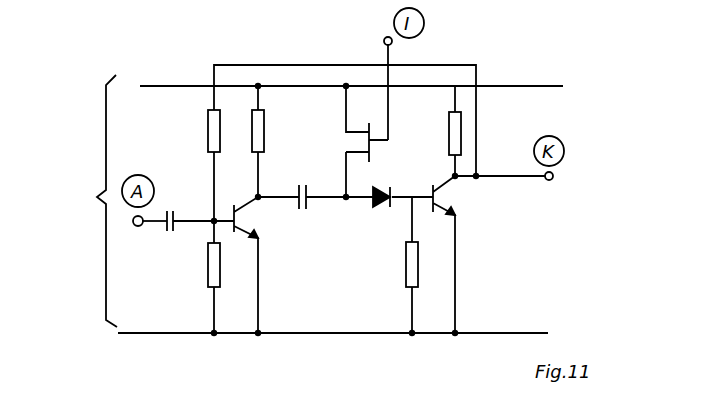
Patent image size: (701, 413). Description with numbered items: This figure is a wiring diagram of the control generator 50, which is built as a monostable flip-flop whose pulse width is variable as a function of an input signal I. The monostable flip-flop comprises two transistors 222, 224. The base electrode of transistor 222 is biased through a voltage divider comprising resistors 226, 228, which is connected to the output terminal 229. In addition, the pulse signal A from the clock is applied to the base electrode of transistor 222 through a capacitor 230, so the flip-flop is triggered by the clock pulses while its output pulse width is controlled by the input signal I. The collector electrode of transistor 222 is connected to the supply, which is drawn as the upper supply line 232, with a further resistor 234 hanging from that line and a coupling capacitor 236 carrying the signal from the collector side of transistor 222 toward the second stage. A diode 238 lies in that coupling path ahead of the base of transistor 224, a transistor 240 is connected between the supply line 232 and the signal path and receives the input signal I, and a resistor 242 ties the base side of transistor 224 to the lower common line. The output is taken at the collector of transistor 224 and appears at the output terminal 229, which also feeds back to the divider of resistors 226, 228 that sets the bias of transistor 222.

The control generator 50 is at (87, 201).
The transistor 222 is at (254, 222).
The transistor 224 is at (450, 205).
The resistor 226 is at (213, 128).
The resistor 228 is at (213, 265).
The output terminal 229 is at (491, 175).
The capacitor 230 is at (164, 225).
The supply line 232 is at (506, 88).
The resistor 234 is at (262, 137).
The coupling capacitor 236 is at (303, 197).
The diode 238 is at (377, 203).
The field effect transistor 240 is at (362, 146).
The resistor 242 is at (410, 258).